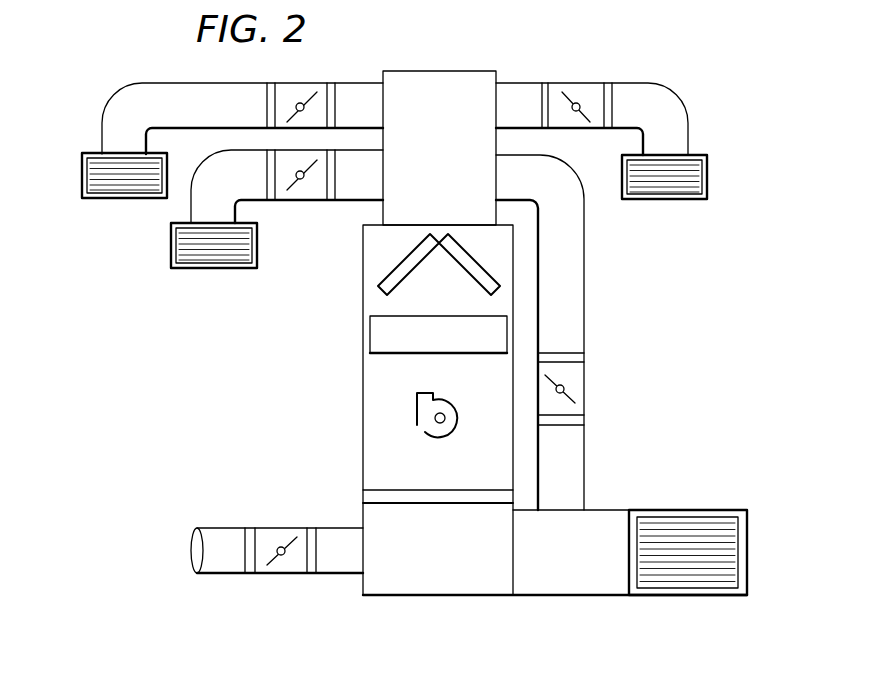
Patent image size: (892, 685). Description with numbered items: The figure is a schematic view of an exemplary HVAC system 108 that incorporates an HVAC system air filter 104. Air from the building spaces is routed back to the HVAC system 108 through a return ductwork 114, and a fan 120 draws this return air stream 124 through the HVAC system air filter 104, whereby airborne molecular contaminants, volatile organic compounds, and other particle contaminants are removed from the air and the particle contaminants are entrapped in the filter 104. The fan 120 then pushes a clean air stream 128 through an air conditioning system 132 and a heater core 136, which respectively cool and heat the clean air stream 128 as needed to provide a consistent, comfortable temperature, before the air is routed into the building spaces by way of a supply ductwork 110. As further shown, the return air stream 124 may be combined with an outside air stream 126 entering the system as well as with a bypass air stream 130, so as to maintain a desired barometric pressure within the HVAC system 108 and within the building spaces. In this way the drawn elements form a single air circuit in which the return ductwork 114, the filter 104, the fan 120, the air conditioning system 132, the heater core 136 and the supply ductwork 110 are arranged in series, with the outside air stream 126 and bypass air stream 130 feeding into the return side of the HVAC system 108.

The HVAC system air filter 104 is at (363, 493).
The HVAC system 108 is at (694, 63).
The supply ductwork 110 is at (102, 131).
The return ductwork 114 is at (590, 587).
The fan 120 is at (427, 428).
The return air stream 124 is at (722, 553).
The outside air stream 126 is at (197, 552).
The clean air stream 128 is at (185, 243).
The bypass air stream 130 is at (585, 302).
The air conditioning system 132 is at (395, 270).
The heater core 136 is at (381, 330).